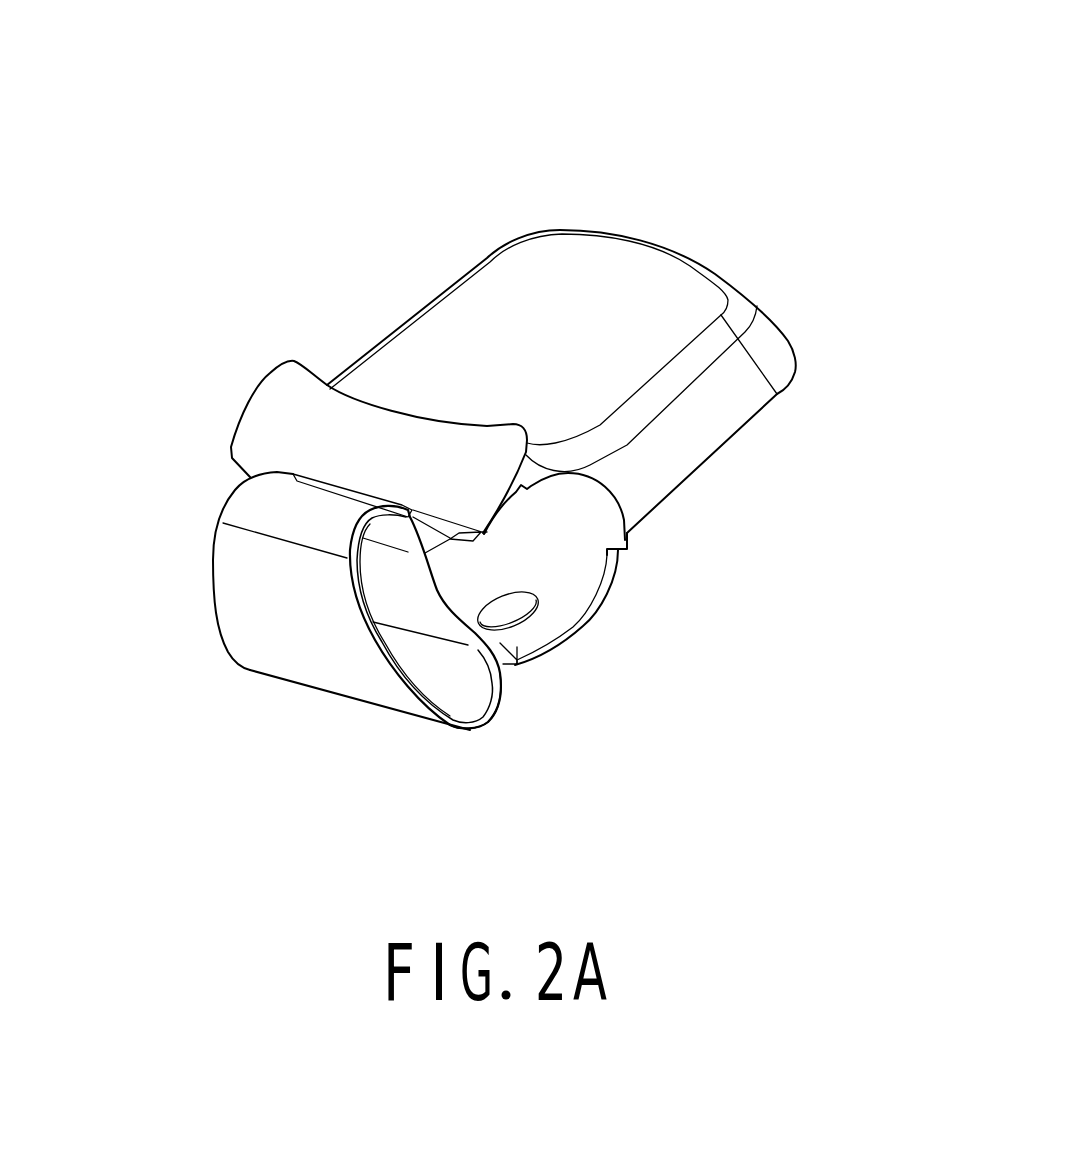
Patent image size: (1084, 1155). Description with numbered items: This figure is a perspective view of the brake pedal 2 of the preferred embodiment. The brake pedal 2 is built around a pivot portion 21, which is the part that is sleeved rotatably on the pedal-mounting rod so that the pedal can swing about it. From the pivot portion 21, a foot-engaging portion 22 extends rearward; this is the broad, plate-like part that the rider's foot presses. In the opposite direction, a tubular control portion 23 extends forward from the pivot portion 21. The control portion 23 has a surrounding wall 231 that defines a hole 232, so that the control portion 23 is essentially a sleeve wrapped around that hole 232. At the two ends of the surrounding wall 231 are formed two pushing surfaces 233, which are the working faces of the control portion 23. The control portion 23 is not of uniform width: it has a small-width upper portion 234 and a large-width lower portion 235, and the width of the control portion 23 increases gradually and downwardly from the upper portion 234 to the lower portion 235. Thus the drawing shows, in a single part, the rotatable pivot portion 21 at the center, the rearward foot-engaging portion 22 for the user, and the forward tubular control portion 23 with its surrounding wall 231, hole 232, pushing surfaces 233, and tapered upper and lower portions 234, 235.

The brake pedal 2 is at (661, 150).
The pivot portion 21 is at (570, 583).
The foot-engaging portion 22 is at (655, 292).
The tubular control portion 23 is at (243, 599).
The surrounding wall 231 is at (470, 717).
The hole 232 is at (447, 670).
The pushing surfaces 233 is at (389, 672).
The small-width upper portion 234 is at (247, 500).
The large-width lower portion 235 is at (293, 683).